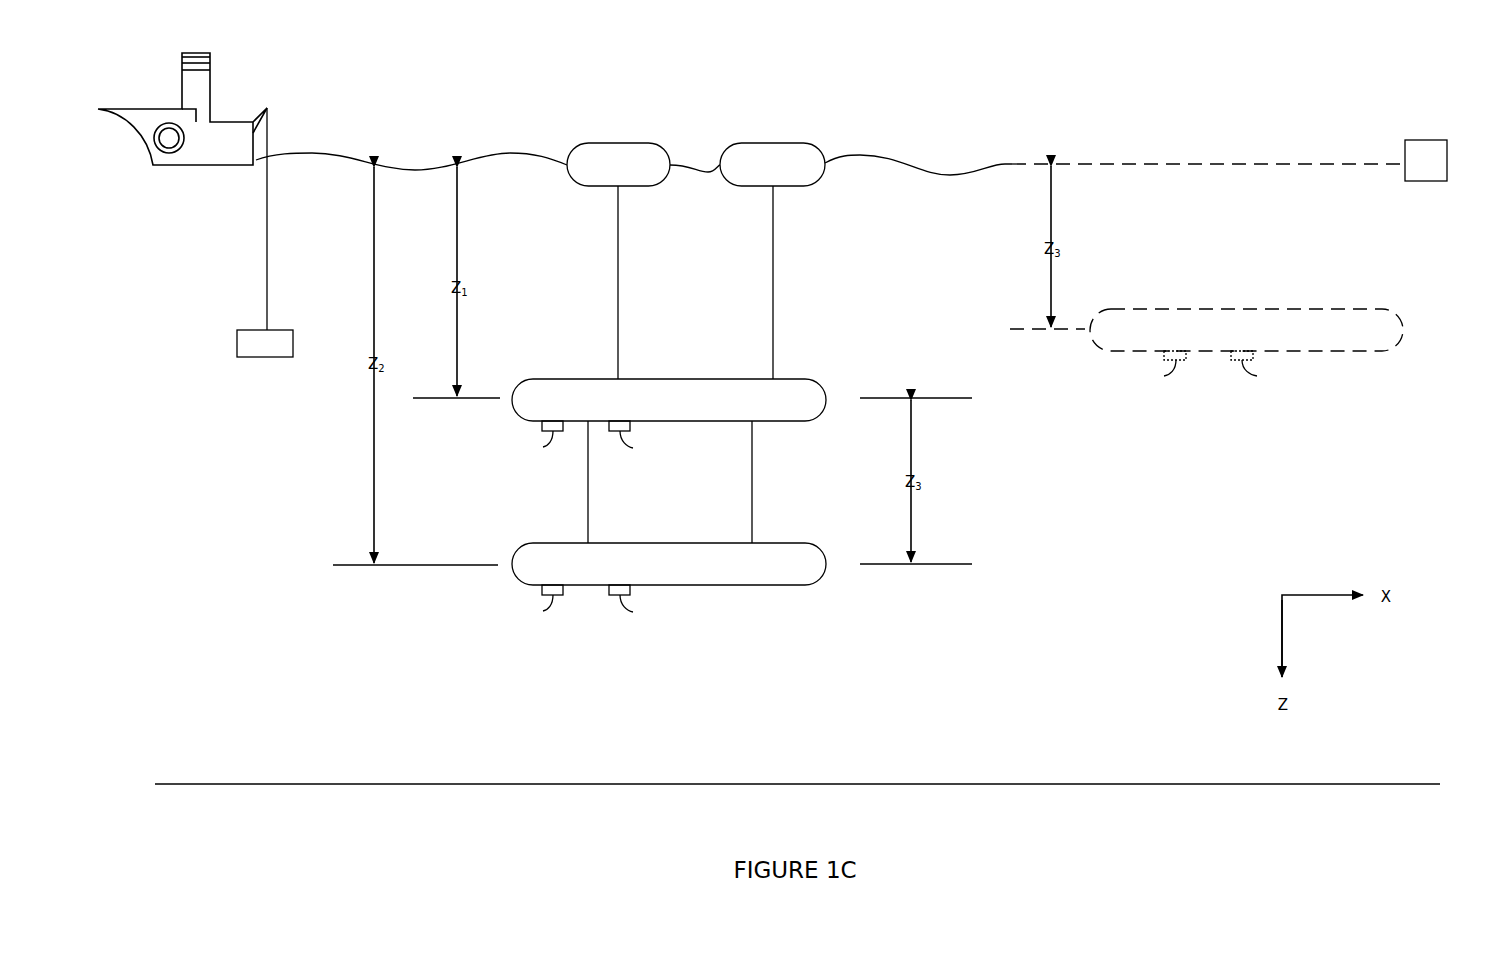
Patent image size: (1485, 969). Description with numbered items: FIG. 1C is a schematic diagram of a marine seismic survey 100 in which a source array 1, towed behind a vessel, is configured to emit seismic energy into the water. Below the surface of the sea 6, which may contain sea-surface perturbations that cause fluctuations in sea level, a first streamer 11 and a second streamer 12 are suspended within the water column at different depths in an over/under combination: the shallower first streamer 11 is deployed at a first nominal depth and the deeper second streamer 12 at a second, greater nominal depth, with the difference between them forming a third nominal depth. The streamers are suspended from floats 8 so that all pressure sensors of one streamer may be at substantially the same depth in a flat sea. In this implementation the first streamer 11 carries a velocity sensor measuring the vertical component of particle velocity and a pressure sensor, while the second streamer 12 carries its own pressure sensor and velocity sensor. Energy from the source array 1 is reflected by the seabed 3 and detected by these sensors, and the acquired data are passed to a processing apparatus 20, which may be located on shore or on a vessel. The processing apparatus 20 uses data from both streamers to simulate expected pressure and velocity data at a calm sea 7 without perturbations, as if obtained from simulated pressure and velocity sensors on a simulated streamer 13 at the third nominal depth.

The marine seismic survey 100 is at (771, 55).
The source array 1 is at (293, 345).
The surface of the sea 6 is at (322, 152).
The floats 8 is at (618, 143).
The calm sea 7 is at (1145, 163).
The processing apparatus 20 is at (1428, 140).
The simulated streamer 13 is at (1400, 329).
The first streamer 11 is at (826, 399).
The second streamer 12 is at (826, 564).
The seabed 3 is at (1145, 783).